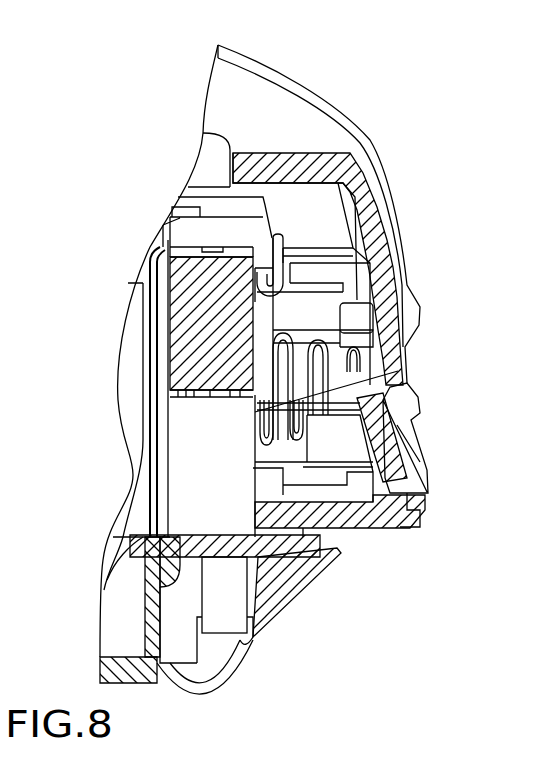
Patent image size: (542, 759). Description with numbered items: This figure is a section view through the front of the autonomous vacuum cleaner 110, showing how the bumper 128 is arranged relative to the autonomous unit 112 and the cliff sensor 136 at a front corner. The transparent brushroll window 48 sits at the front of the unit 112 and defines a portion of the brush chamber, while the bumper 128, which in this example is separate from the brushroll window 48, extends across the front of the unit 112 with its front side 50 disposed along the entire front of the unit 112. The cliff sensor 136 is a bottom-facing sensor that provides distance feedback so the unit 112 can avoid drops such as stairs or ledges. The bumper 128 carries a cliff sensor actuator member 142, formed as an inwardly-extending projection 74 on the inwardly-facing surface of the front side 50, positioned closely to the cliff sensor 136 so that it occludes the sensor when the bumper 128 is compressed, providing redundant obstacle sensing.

The brushroll window 48 is at (277, 63).
The autonomous vacuum cleaner 110 is at (303, 335).
The bumper 128 is at (398, 220).
The front side 50 is at (388, 316).
The inwardly-extending projection 74 is at (398, 371).
The cliff sensor 136 is at (190, 290).
The cliff sensor actuator member 142 is at (257, 434).
The autonomous unit 112 is at (320, 603).